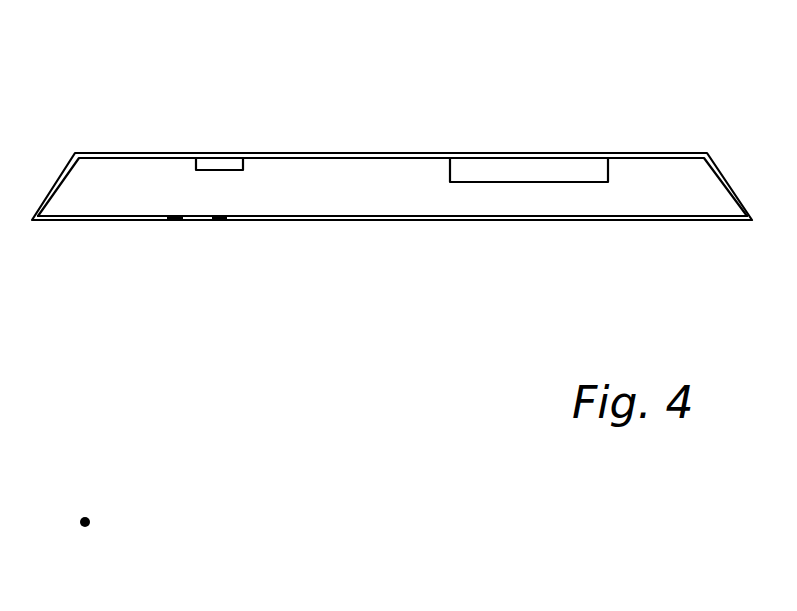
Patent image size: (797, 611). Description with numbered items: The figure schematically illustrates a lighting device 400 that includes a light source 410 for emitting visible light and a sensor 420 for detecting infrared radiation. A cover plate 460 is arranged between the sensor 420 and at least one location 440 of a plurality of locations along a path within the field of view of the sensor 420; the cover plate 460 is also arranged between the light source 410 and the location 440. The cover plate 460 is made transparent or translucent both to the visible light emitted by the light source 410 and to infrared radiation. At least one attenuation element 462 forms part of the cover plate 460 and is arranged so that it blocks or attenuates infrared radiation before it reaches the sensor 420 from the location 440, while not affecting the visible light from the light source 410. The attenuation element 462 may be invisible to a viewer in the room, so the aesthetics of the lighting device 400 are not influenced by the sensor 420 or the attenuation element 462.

The lighting device 400 is at (676, 92).
The light source 410 is at (513, 168).
The sensor 420 is at (219, 165).
The location 440 is at (90, 524).
The cover plate 460 is at (515, 218).
The attenuation element 462 is at (175, 222).